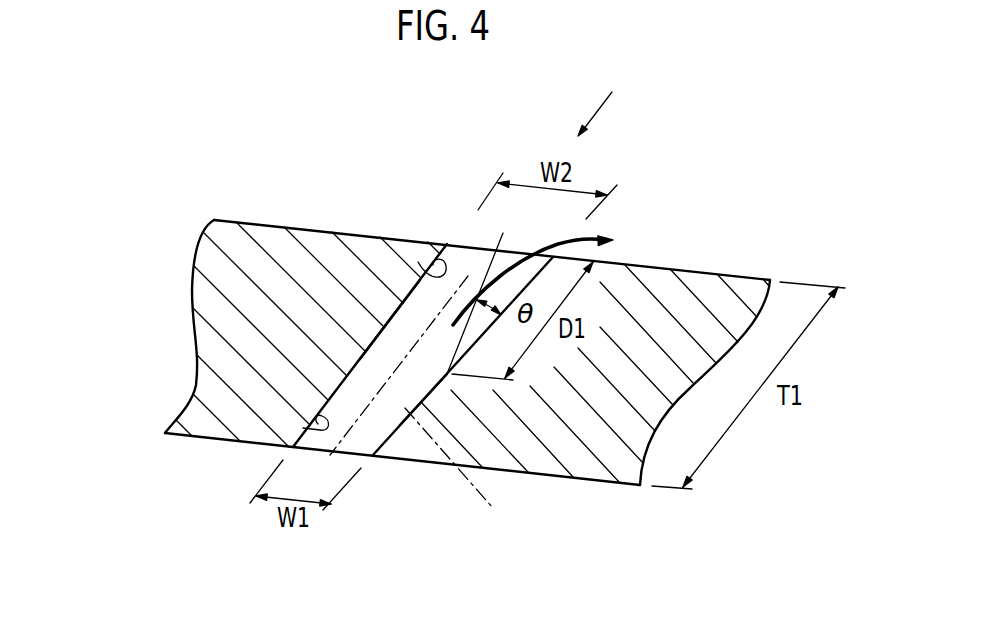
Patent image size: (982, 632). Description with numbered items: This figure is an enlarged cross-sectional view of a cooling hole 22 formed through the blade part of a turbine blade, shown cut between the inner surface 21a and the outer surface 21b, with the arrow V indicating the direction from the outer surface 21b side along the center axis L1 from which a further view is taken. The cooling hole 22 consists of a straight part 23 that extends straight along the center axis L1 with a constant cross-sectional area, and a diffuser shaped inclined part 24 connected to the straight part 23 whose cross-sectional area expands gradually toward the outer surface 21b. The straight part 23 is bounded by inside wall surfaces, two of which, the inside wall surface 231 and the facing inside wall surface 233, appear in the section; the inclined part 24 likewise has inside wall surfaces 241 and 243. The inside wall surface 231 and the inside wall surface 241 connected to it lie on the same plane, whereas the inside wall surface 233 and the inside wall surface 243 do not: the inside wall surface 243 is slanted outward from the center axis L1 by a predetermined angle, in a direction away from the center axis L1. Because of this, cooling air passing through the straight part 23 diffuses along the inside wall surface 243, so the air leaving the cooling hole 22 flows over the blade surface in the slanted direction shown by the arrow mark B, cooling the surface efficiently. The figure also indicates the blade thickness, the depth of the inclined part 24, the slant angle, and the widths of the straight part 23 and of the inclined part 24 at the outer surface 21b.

The inner surface 21a is at (598, 480).
The outer surface 21b is at (700, 270).
The cooling hole 22 is at (457, 266).
The straight part 23 is at (372, 430).
The inclined part 24 is at (431, 298).
The inside wall surface 231 is at (303, 428).
The inside wall surface 233 is at (478, 467).
The inside wall surface 241 is at (418, 262).
The inside wall surface 243 is at (390, 320).
The center axis L1 is at (493, 508).
The arrow mark B is at (544, 275).
The arrow V is at (603, 96).